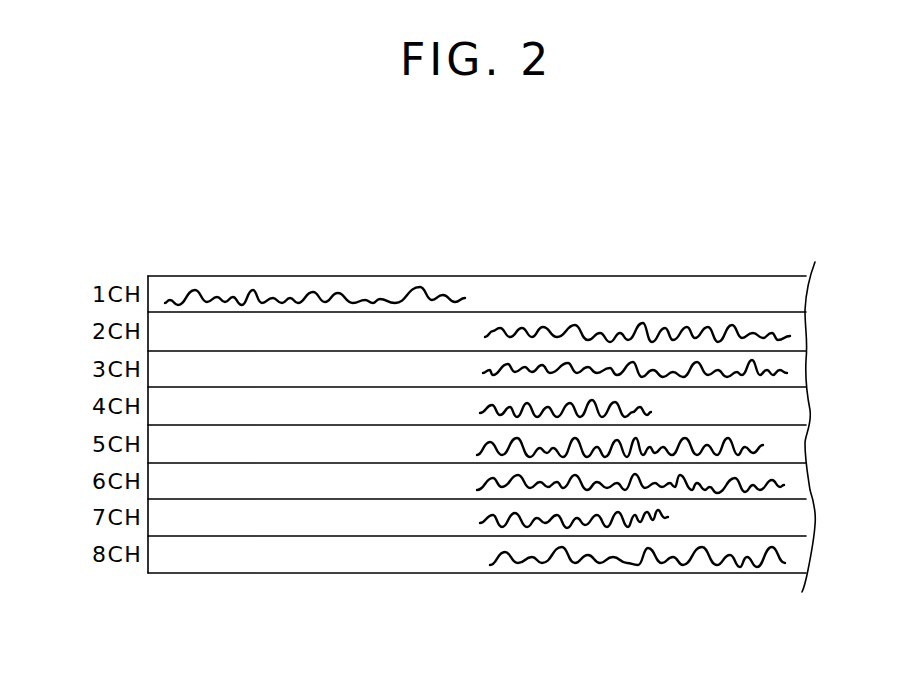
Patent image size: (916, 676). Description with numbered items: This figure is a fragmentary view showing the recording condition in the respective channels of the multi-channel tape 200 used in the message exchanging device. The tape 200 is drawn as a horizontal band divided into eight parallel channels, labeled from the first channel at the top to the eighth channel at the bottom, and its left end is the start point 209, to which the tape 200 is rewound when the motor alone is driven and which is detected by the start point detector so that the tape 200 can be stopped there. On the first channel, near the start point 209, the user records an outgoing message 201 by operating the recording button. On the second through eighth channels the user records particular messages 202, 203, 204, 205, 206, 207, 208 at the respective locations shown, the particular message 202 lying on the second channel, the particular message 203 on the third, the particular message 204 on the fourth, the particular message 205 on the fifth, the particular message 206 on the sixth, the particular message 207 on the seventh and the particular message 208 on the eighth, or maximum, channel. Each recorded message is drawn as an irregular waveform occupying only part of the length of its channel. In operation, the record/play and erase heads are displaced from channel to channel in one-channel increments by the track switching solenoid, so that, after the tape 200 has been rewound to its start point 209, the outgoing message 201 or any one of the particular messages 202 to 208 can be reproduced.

The multi-channel tape 200 is at (723, 250).
The outgoing message 201 is at (422, 288).
The particular message 202 is at (782, 335).
The particular message 203 is at (789, 372).
The particular message 204 is at (651, 412).
The particular message 205 is at (765, 447).
The particular message 206 is at (784, 485).
The particular message 207 is at (672, 516).
The particular message 208 is at (747, 562).
The start point 209 is at (148, 573).